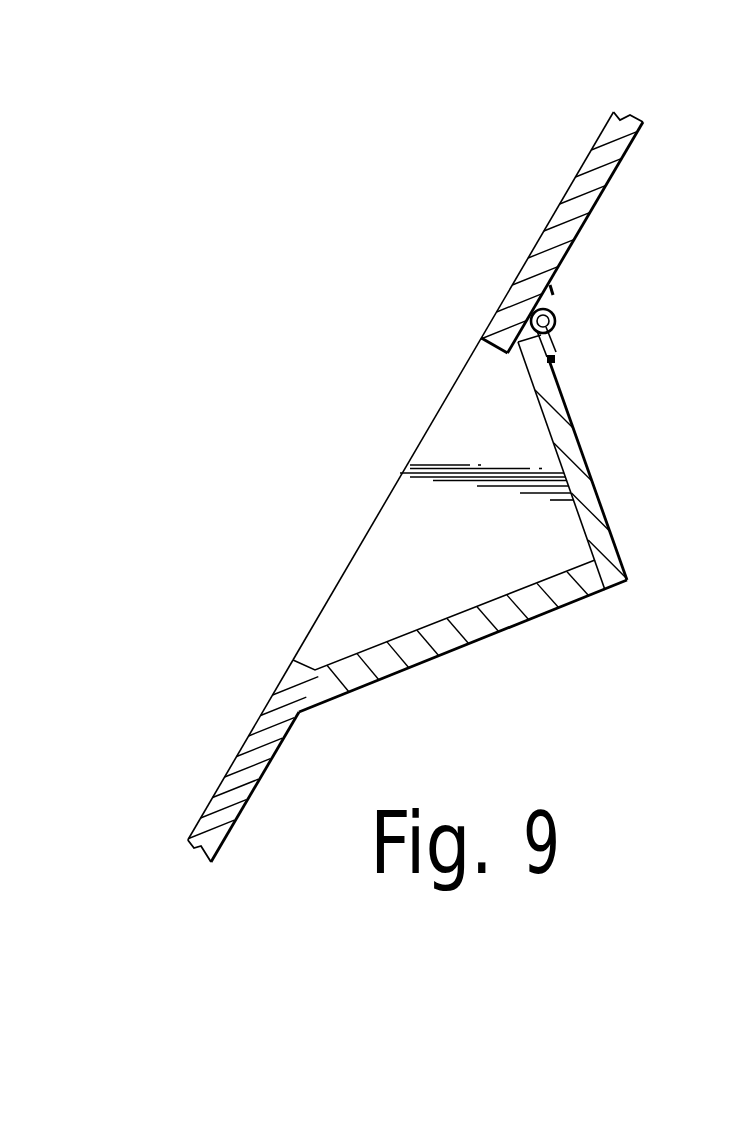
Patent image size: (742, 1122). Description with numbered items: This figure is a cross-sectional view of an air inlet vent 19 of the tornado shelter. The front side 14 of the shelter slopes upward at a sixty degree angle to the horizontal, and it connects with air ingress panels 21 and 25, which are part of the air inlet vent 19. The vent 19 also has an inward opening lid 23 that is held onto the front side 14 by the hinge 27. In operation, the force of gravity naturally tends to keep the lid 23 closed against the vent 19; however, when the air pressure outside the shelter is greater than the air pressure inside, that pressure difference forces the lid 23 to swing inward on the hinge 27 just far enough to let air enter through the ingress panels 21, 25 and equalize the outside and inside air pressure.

The front side 14 is at (581, 168).
The air inlet vent 19 is at (300, 562).
The air ingress panel 21 is at (423, 658).
The inward opening lid 23 is at (595, 495).
The air ingress panel 25 is at (468, 417).
The hinge 27 is at (557, 316).